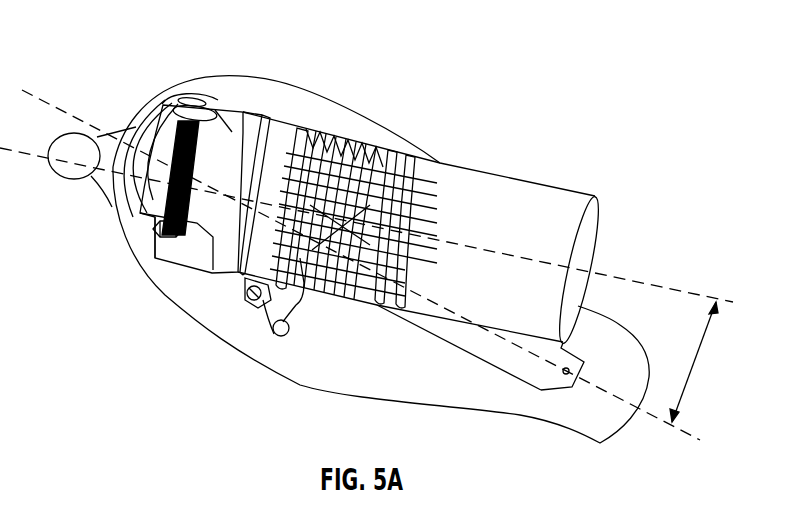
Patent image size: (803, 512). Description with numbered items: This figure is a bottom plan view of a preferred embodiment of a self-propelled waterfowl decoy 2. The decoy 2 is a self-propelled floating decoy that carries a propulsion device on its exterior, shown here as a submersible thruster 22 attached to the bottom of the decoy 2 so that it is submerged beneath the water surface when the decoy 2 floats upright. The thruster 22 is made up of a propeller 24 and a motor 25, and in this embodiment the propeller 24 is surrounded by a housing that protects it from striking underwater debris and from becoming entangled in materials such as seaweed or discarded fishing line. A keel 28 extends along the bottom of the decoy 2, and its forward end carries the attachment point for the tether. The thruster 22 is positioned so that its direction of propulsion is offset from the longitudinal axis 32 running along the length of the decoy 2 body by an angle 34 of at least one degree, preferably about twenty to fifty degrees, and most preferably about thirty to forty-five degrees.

The decoy 2 is at (125, 52).
The thruster 22 is at (458, 145).
The propeller 24 is at (364, 176).
The motor 25 is at (148, 197).
The keel 28 is at (448, 341).
The longitudinal axis 32 is at (50, 104).
The angle 34 is at (700, 363).